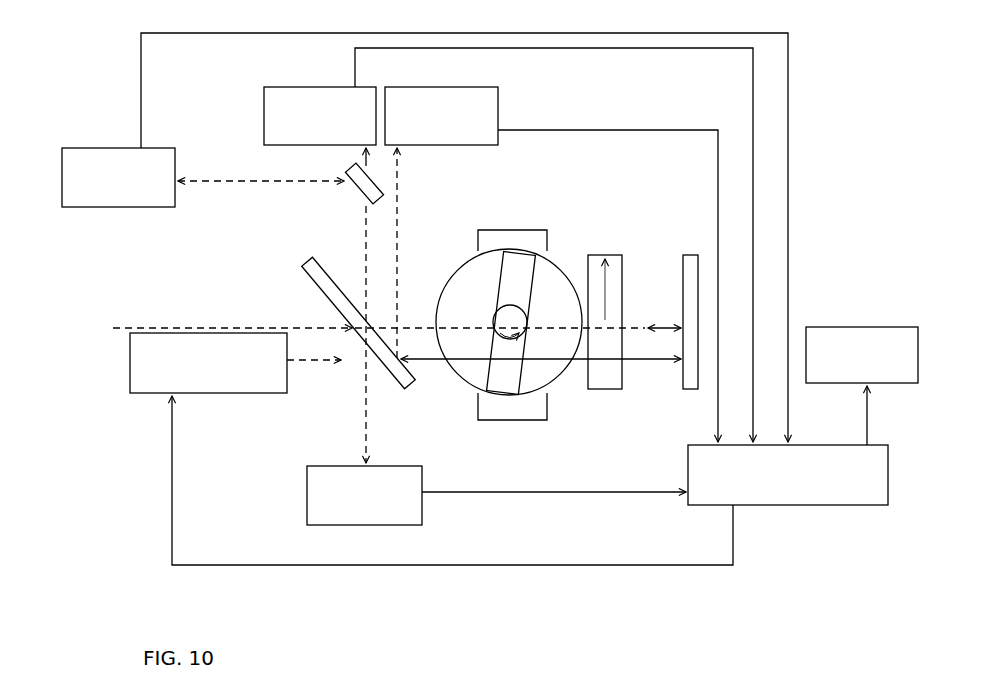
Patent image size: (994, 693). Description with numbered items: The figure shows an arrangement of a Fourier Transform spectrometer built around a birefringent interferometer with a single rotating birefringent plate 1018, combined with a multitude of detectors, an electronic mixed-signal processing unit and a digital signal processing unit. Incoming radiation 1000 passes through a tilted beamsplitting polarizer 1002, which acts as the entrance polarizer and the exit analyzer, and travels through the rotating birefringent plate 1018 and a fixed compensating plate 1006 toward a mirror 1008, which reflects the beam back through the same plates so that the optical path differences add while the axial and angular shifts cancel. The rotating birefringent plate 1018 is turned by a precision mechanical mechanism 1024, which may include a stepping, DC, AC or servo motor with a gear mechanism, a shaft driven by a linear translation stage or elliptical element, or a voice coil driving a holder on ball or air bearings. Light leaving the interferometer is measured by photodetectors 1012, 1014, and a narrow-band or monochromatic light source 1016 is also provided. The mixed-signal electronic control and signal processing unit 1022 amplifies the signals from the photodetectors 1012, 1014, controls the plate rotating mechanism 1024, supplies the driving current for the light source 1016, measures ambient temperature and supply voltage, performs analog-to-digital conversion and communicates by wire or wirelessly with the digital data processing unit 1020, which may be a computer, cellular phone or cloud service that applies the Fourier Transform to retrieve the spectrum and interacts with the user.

The light beam 1000 is at (254, 118).
The beam splitter 1002 is at (352, 292).
The polarizer 1006 is at (608, 251).
The mirror 1008 is at (690, 252).
The photodetector 1012 is at (304, 482).
The photodetector 1014 is at (501, 108).
The narrow-band or monochromatic light source 1016 is at (128, 358).
The rotating birefringent plate 1018 is at (486, 277).
The digital data processing unit 1020 is at (893, 322).
The mixed-signal electronic control and signal processing unit 1022 is at (89, 145).
The precision mechanical mechanism 1024 is at (345, 186).